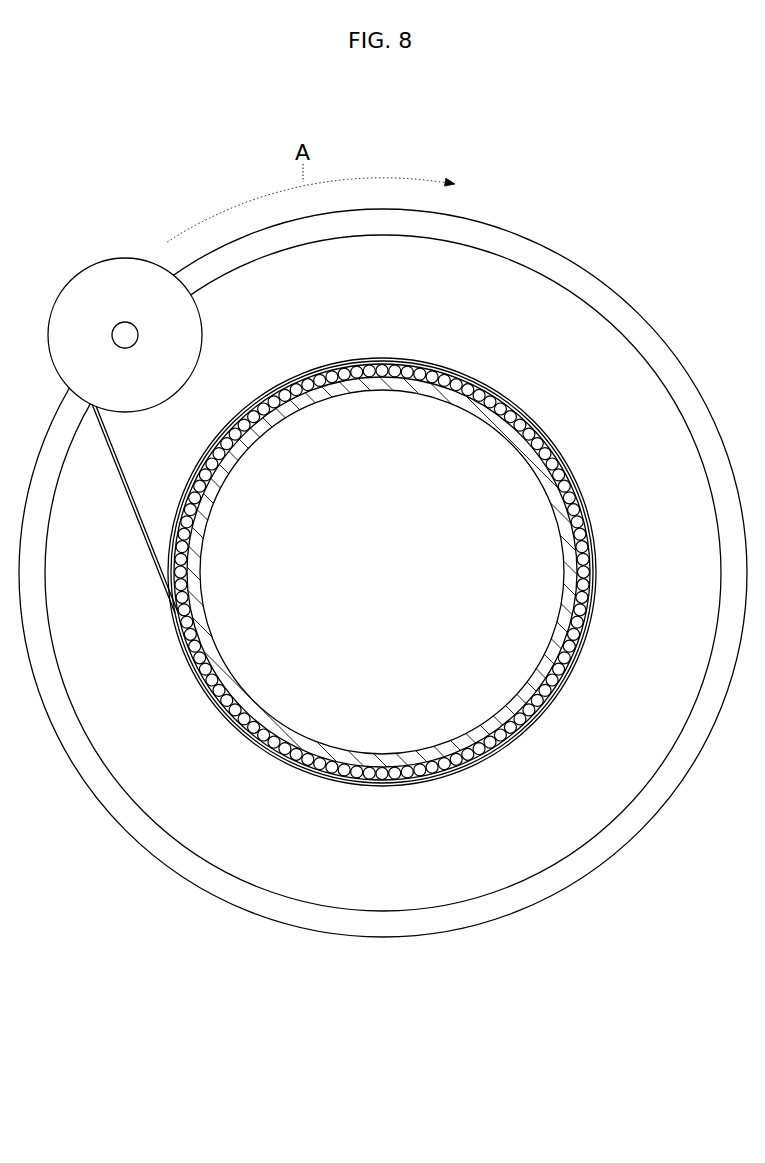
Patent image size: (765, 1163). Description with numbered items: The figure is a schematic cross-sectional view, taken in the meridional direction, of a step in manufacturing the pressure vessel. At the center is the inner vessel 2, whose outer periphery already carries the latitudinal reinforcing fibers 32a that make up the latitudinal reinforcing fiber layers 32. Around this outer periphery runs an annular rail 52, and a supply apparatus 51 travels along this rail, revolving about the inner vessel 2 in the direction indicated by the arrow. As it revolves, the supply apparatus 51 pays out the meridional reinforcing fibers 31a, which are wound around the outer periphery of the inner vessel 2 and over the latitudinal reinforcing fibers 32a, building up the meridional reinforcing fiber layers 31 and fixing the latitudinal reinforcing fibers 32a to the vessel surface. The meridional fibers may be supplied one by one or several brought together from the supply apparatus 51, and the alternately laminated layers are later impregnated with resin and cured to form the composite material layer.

The inner vessel 2 is at (514, 404).
The meridional reinforcing fiber layers 31 is at (598, 594).
The meridional reinforcing fibers 31a is at (148, 562).
The latitudinal reinforcing fiber layers 32 is at (591, 536).
The latitudinal reinforcing fibers 32a is at (557, 464).
The supply apparatus 51 is at (103, 256).
The annular rail 52 is at (620, 298).